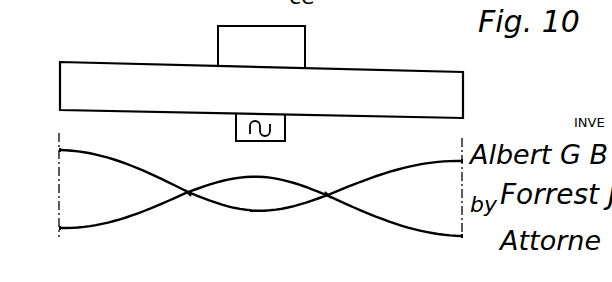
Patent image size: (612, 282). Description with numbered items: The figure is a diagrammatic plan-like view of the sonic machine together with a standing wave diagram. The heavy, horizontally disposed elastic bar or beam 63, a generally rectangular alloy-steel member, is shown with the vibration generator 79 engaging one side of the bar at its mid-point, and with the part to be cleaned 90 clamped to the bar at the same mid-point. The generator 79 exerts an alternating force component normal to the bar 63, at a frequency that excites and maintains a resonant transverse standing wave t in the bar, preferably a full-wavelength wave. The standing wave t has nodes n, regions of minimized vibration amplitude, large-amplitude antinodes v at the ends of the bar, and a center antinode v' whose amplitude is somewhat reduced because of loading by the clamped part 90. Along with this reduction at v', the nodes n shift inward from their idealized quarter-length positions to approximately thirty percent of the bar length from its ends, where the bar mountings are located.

The elastic bar or beam 63 is at (400, 76).
The part to be cleaned 90 is at (305, 46).
The vibration generator 79 is at (286, 130).
The transverse standing wave t is at (240, 212).
The nodes n is at (188, 196).
The antinodes v is at (240, 193).
The center antinode v' is at (279, 226).